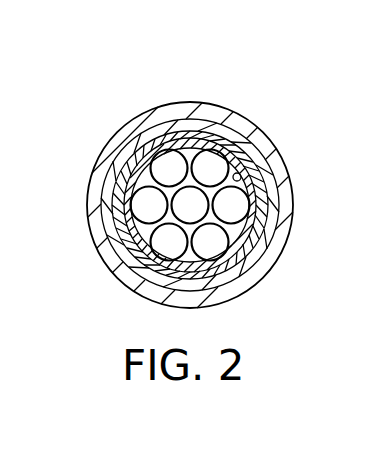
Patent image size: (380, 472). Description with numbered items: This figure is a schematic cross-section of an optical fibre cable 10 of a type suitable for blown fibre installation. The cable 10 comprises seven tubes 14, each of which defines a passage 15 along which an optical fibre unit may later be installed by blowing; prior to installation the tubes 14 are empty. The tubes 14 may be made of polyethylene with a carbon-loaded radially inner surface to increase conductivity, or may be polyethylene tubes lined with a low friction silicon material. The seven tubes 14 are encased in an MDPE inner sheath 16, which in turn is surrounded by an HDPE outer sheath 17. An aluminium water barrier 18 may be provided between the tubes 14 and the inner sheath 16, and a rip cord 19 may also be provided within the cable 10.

The optical fibre cable 10 is at (236, 104).
The tube 14 is at (130, 222).
The passage 15 is at (168, 249).
The inner sheath 16 is at (157, 128).
The outer sheath 17 is at (97, 196).
The aluminium water barrier 18 is at (126, 163).
The rip cord 19 is at (242, 177).